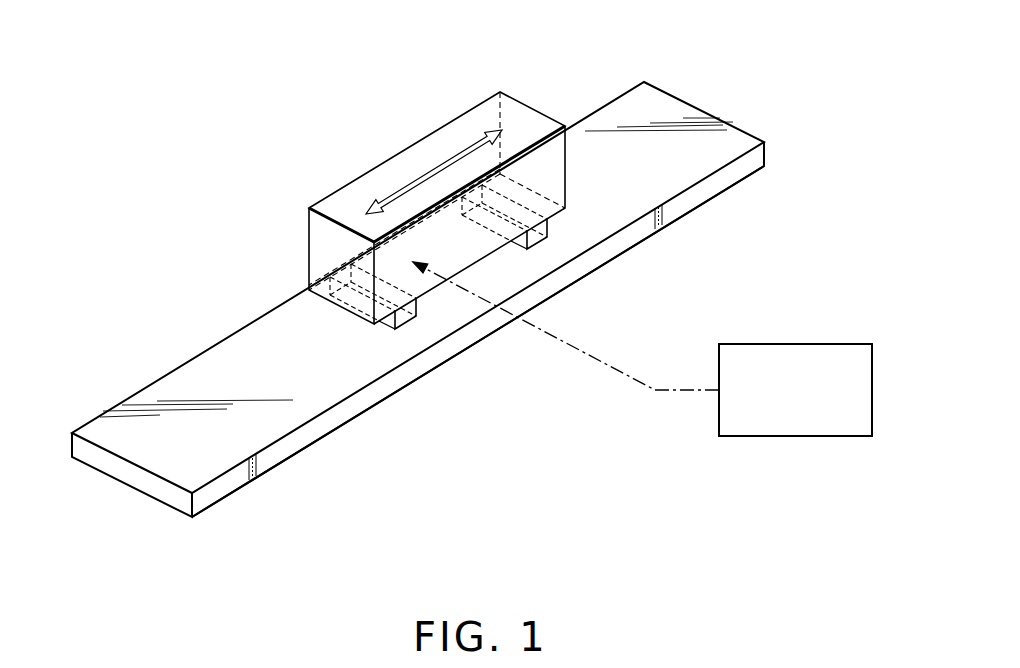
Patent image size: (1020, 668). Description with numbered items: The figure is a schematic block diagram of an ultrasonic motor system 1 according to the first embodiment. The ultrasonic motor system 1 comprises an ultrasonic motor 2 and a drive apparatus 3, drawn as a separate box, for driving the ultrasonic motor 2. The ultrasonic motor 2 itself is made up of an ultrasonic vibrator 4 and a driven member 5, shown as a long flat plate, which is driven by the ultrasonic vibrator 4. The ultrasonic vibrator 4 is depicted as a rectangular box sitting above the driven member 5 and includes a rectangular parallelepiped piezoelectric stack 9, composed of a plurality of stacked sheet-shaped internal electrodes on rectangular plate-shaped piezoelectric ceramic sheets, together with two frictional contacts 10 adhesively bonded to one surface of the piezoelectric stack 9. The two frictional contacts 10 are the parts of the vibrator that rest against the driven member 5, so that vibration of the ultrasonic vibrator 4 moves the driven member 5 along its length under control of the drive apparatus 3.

The ultrasonic motor system 1 is at (592, 476).
The ultrasonic motor 2 is at (668, 75).
The drive apparatus 3 is at (787, 437).
The ultrasonic vibrator 4 is at (455, 232).
The driven member 5 is at (207, 495).
The piezoelectric stack 9 is at (565, 155).
The frictional contacts 10 is at (548, 223).